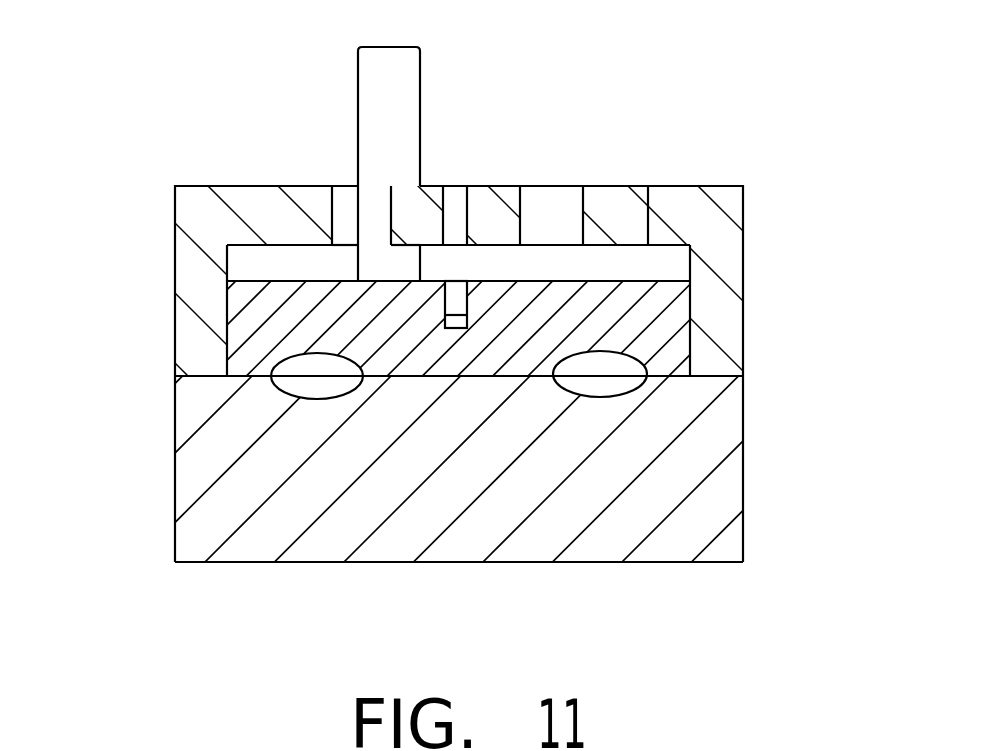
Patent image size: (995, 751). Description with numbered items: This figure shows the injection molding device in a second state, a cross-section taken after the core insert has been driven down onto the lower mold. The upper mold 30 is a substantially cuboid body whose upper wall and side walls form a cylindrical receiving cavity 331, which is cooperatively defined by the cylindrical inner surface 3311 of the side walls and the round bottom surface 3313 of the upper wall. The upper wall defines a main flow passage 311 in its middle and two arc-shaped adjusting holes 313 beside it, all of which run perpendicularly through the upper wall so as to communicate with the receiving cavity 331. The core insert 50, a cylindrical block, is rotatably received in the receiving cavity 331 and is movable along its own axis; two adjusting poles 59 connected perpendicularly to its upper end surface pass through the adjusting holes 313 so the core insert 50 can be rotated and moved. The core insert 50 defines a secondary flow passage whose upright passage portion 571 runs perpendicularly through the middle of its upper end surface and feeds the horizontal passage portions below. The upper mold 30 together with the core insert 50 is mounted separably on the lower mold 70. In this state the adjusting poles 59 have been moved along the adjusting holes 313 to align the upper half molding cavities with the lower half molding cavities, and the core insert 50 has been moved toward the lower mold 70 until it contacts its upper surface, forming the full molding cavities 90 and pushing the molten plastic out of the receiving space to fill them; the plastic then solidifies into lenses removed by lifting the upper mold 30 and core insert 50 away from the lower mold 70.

The upper mold 30 is at (733, 198).
The main flow passage 311 is at (458, 196).
The adjusting holes 313 is at (548, 200).
The round bottom surface 3313 is at (652, 205).
The cylindrical receiving cavity 331 is at (252, 263).
The cylindrical inner surface 3311 is at (697, 257).
The adjusting poles 59 is at (385, 88).
The upright passage portion 571 is at (467, 298).
The core insert 50 is at (657, 337).
The full molding cavities 90 is at (290, 383).
The lower mold 70 is at (673, 467).